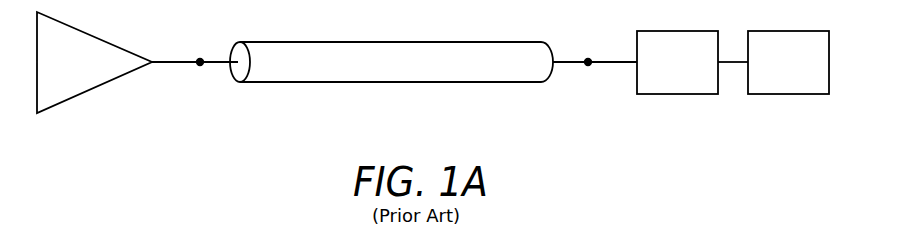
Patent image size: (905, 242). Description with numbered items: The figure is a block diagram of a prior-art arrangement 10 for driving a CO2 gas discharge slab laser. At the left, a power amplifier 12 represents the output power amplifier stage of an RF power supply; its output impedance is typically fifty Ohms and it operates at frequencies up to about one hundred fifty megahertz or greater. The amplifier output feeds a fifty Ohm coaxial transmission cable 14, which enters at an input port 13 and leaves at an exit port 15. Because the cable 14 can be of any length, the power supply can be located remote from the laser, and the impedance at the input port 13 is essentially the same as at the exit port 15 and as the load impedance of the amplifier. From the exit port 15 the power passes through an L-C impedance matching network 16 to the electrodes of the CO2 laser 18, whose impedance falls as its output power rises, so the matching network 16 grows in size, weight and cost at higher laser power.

The prior-art arrangement 10 is at (538, 143).
The power amplifier 12 is at (117, 80).
The input port 13 is at (200, 65).
The coaxial transmission cable 14 is at (335, 83).
The exit port 15 is at (588, 65).
The impedance matching network 16 is at (665, 94).
The CO2 laser 18 is at (793, 94).